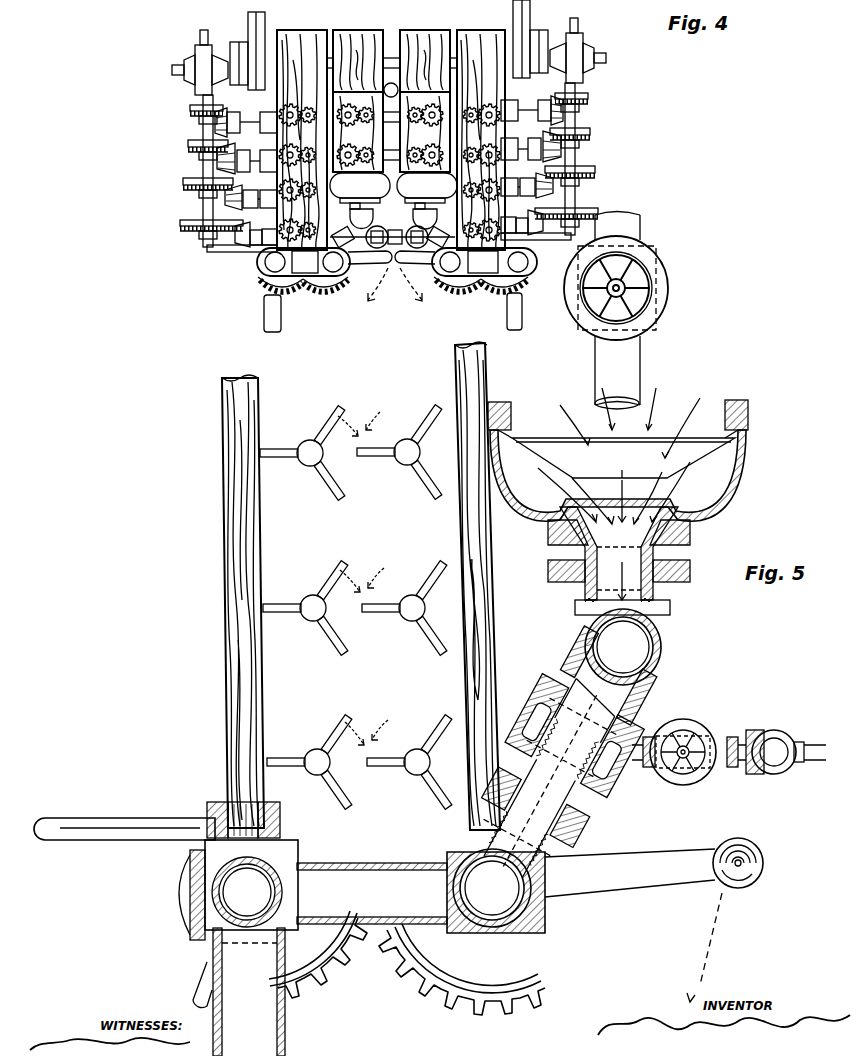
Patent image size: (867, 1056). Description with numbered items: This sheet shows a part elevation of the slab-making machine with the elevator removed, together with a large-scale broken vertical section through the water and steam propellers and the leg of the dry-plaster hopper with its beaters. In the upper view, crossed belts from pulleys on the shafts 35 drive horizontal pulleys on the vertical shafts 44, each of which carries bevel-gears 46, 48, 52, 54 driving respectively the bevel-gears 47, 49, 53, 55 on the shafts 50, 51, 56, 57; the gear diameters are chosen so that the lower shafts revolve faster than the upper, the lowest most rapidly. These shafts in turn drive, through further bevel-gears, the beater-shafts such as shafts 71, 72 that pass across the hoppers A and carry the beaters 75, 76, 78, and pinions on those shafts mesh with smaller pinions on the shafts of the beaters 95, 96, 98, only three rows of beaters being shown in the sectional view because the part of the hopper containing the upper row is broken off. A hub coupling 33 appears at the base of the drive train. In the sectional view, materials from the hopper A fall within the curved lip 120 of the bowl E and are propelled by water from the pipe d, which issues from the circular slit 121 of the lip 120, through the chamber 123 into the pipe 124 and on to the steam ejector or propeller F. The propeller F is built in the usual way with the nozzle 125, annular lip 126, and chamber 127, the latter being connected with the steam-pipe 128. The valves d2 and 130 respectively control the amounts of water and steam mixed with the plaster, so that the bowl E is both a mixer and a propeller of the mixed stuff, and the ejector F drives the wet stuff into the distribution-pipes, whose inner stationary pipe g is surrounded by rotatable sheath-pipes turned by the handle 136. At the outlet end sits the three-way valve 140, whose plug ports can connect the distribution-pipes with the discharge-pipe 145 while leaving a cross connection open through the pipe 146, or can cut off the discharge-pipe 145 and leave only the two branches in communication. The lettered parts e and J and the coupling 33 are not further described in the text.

In FIG. 4, the vertical shaft 44 is at (205, 30).
In FIG. 4, the shaft 35 is at (170, 69).
In FIG. 4, the bevel-gear 46 is at (190, 108).
In FIG. 4, the bevel-gear 47 is at (215, 122).
In FIG. 4, the bevel-gear 48 is at (188, 146).
In FIG. 4, the bevel-gear 49 is at (217, 161).
In FIG. 4, the shaft 50 is at (256, 120).
In FIG. 4, the shaft 51 is at (389, 151).
In FIG. 4, the bevel-gear 52 is at (183, 183).
In FIG. 4, the bevel-gear 53 is at (225, 198).
In FIG. 4, the bevel-gear 54 is at (180, 223).
In FIG. 4, the bevel-gear 55 is at (240, 252).
In FIG. 4, the shaft 56 is at (389, 188).
In FIG. 4, the shaft 57 is at (265, 229).
In FIG. 4, the shaft 71 is at (268, 150).
In FIG. 4, the shaft 72 is at (272, 190).
In FIG. 4, the hub coupling 33 is at (303, 262).
In FIG. 4, the hopper A is at (391, 128).
In FIG. 4, the bowl E is at (393, 201).
In FIG. 5, the bowl E is at (629, 460).
In FIG. 4, the pipe d is at (595, 353).
In FIG. 4, the valve d2 is at (629, 288).
In FIG. 5, the beater 75 is at (302, 453).
In FIG. 5, the beater 76 is at (305, 608).
In FIG. 5, the beater 78 is at (309, 762).
In FIG. 5, the beater 95 is at (399, 452).
In FIG. 5, the beater 96 is at (404, 608).
In FIG. 5, the beater 98 is at (409, 762).
In FIG. 5, the curved lip 120 is at (623, 458).
In FIG. 5, the circular slit 121 is at (603, 541).
In FIG. 5, the chamber 123 is at (700, 513).
In FIG. 5, the pipe 124 is at (585, 598).
In FIG. 5, the nozzle 125 is at (590, 755).
In FIG. 5, the annular lip 126 is at (545, 738).
In FIG. 5, the chamber 127 is at (535, 752).
In FIG. 5, the steam-pipe 128 is at (786, 735).
In FIG. 5, the valve 130 is at (689, 740).
In FIG. 5, the handle 136 is at (669, 914).
In FIG. 5, the three-way valve 140 is at (262, 842).
In FIG. 5, the discharge-pipe 145 is at (232, 953).
In FIG. 5, the pipe 146 is at (372, 874).
In FIG. 5, the pipe e is at (640, 650).
In FIG. 5, the steam ejector or propeller F is at (629, 794).
In FIG. 5, the inner stationary pipe g is at (375, 886).
In FIG. 5, the lever J is at (53, 876).